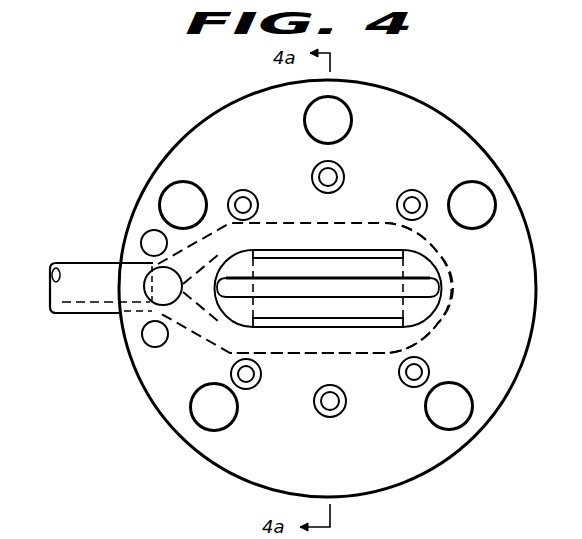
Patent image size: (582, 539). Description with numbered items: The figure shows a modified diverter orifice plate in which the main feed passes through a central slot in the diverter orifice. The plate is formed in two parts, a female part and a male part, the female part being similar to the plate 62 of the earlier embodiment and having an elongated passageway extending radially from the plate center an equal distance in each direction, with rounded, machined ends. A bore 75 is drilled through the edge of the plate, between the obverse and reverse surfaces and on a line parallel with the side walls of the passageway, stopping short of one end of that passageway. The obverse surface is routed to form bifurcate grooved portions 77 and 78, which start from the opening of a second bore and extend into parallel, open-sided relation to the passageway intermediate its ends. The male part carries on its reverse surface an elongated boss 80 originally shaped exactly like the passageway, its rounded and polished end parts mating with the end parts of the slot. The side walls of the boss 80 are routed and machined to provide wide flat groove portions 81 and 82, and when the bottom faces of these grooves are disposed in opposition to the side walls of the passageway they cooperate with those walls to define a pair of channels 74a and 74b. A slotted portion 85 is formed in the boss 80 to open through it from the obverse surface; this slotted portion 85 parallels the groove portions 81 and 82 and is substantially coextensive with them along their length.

The plate 62 is at (450, 140).
The bore 75 is at (134, 268).
The grooved portion 78 is at (387, 218).
The channel 74a is at (394, 324).
The channel 74b is at (390, 249).
The grooved portion 77 is at (372, 350).
The groove portion 82 is at (272, 262).
The boss 80 is at (298, 268).
The groove portion 81 is at (318, 322).
The slotted portion 85 is at (432, 290).